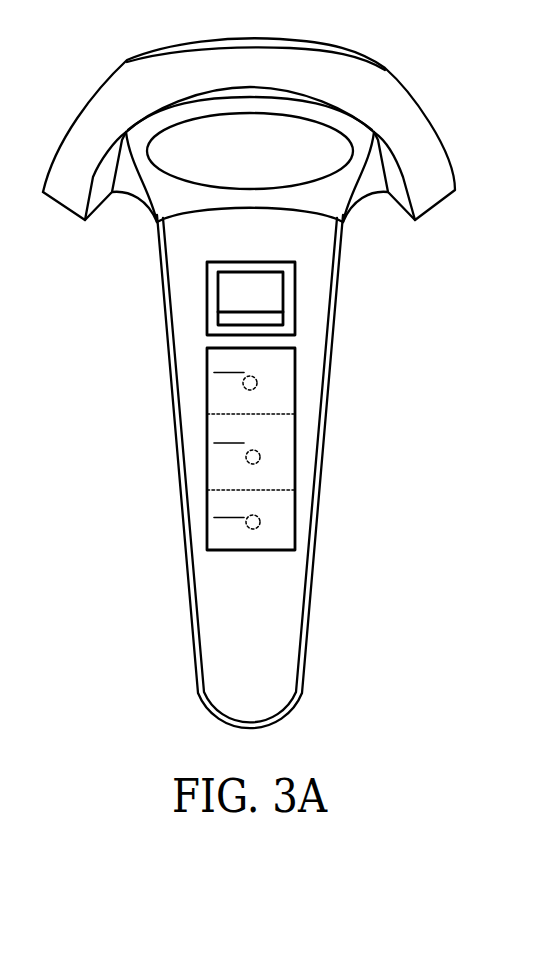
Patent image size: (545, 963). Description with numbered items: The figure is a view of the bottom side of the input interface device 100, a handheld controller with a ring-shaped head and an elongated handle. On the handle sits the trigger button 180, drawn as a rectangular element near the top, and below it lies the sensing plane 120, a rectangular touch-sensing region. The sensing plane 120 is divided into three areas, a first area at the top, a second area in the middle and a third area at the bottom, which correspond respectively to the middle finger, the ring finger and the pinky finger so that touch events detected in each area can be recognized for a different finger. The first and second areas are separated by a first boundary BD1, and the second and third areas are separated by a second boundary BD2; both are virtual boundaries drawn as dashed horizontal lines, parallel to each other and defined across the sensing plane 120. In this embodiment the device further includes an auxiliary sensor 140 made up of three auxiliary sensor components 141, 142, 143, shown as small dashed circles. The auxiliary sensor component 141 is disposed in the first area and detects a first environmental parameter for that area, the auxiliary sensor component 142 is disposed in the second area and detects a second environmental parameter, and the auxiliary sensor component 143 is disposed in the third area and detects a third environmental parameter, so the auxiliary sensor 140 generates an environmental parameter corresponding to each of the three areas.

The input interface device 100 is at (412, 100).
The trigger button 180 is at (295, 303).
The sensing plane 120 is at (296, 404).
The auxiliary sensor 140 is at (146, 471).
The auxiliary sensor component 141 is at (244, 388).
The auxiliary sensor component 142 is at (246, 463).
The auxiliary sensor component 143 is at (182, 544).
The first boundary BD1 is at (272, 416).
The second boundary BD2 is at (275, 493).